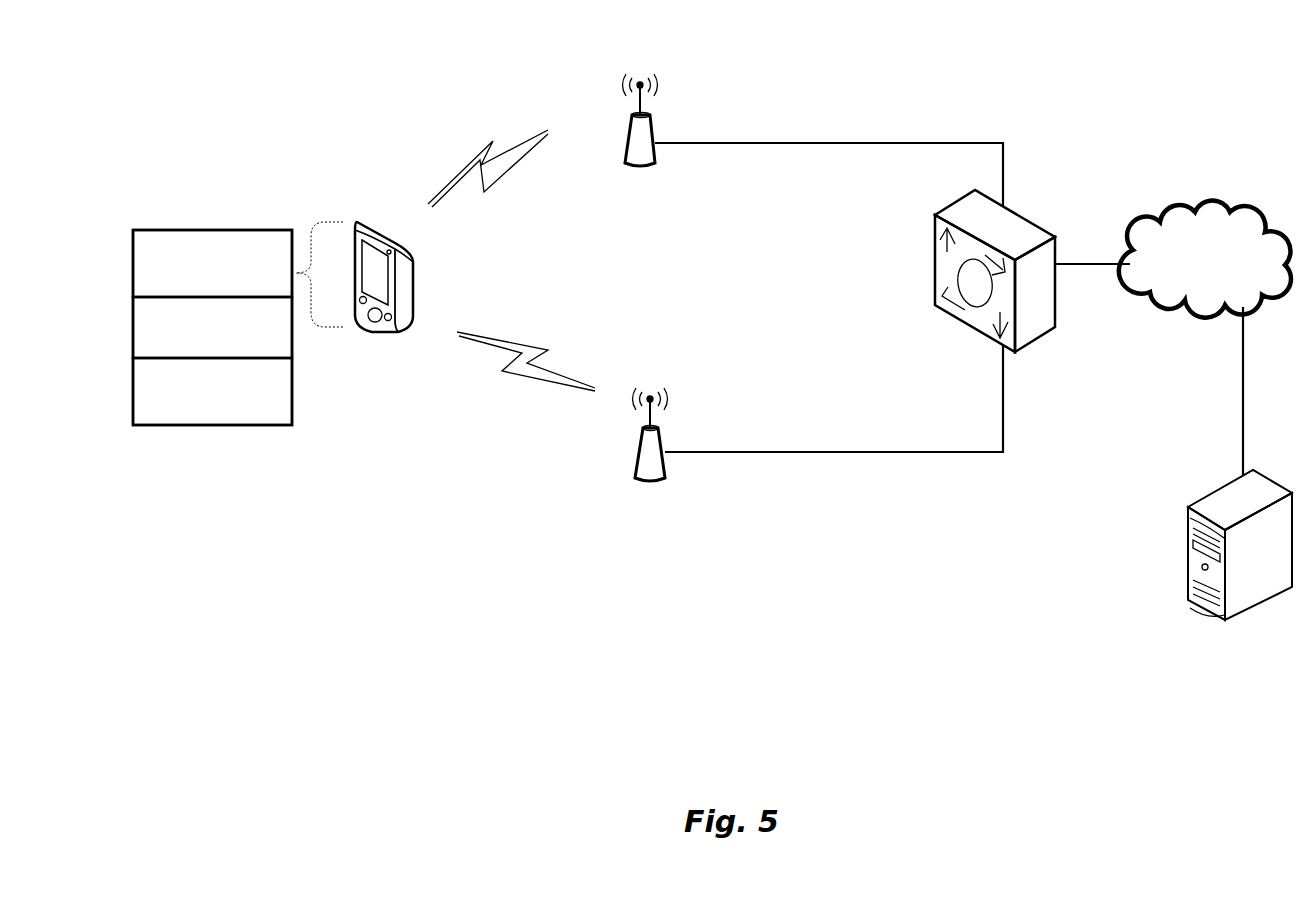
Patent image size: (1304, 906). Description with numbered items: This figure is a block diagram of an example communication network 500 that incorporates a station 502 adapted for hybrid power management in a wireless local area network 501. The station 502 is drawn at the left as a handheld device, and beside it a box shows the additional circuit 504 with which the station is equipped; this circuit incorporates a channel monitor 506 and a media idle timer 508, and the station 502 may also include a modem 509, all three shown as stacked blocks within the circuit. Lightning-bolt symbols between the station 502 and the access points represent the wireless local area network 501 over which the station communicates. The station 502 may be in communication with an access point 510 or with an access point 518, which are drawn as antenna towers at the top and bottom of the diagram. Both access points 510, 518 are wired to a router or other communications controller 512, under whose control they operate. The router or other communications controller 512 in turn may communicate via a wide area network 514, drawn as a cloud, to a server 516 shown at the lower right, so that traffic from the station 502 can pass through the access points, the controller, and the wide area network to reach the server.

The communication network 500 is at (895, 48).
The wireless local area network 501 is at (473, 157).
The station 502 is at (382, 220).
The additional circuit 504 is at (188, 228).
The channel monitor 506 is at (133, 258).
The media idle timer 508 is at (133, 320).
The modem 509 is at (138, 398).
The access point 510 is at (655, 128).
The router or other communications controller 512 is at (1062, 245).
The wide area network 514 is at (1232, 207).
The server 516 is at (1180, 534).
The access point 518 is at (662, 445).